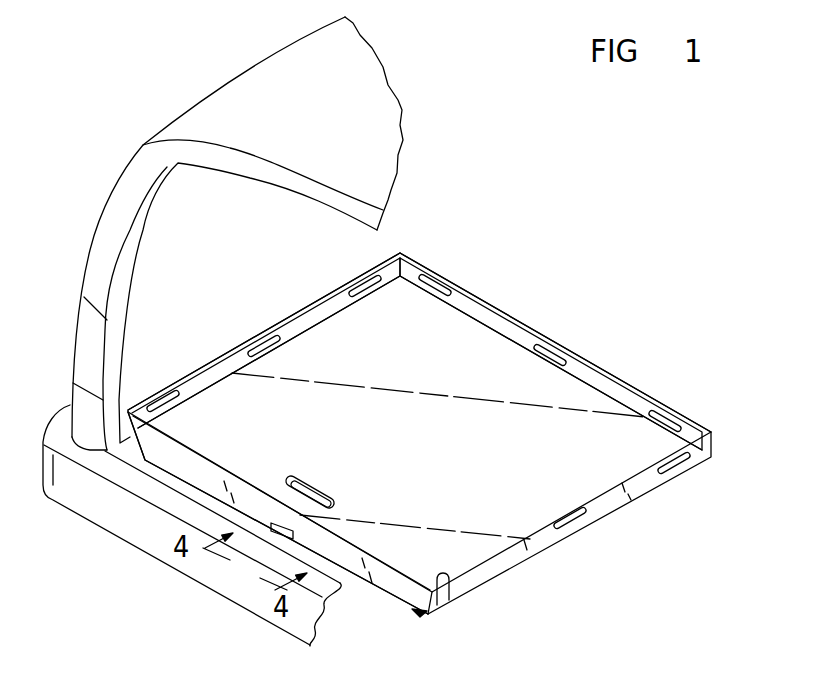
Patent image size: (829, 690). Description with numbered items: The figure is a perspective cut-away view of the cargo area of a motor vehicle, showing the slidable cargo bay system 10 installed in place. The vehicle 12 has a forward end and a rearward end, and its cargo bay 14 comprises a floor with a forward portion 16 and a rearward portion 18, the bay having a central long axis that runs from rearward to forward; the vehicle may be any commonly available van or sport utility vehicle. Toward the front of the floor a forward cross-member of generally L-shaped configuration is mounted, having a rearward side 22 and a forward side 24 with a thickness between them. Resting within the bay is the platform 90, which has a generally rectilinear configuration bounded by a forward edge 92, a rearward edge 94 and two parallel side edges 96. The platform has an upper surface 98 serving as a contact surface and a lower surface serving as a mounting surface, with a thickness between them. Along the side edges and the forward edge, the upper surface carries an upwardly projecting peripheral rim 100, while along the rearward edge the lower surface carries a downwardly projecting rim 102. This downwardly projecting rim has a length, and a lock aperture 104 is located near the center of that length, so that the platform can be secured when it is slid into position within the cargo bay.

The slidable cargo bay system 10 is at (646, 307).
The vehicle 12 is at (243, 115).
The cargo bay 14 is at (200, 302).
The forward portion 16 is at (679, 490).
The rearward portion 18 is at (400, 645).
The rearward side 22 is at (537, 683).
The forward side 24 is at (641, 677).
The platform 90 is at (410, 292).
The forward edge 92 is at (463, 320).
The rearward edge 94 is at (440, 550).
The side edges 96 is at (340, 330).
The upper surface 98 is at (485, 499).
The upwardly projecting peripheral rim 100 is at (520, 333).
The downwardly projecting rim 102 is at (190, 470).
The lock aperture 104 is at (270, 532).